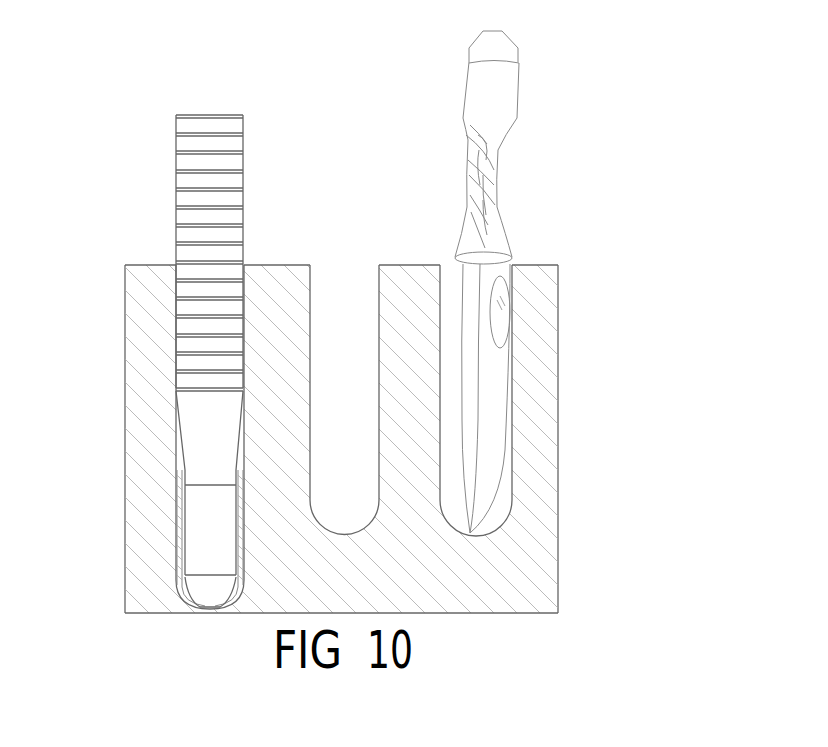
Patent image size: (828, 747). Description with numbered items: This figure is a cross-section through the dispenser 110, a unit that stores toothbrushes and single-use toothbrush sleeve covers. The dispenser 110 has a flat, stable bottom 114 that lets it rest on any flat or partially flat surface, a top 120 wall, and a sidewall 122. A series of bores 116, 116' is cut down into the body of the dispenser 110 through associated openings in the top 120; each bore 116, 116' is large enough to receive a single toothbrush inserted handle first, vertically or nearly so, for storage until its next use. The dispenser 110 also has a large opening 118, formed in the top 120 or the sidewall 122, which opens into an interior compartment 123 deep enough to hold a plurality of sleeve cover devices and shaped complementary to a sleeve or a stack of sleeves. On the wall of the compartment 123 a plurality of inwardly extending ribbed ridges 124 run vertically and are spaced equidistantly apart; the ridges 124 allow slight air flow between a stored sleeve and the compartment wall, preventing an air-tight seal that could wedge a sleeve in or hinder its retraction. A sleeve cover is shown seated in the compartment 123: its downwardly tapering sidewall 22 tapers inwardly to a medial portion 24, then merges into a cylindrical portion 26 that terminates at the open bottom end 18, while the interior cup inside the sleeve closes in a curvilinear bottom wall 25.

The dispenser 110 is at (587, 275).
The bottom 114 is at (513, 614).
The bore 116 is at (453, 385).
The bore 116' is at (322, 376).
The large opening 118 is at (178, 268).
The top wall 120 is at (147, 266).
The sidewall 122 is at (560, 388).
The interior compartment 123 is at (178, 587).
The ribbed ridges 124 is at (176, 503).
The open bottom end 18 is at (469, 62).
The tapering sidewall 22 is at (492, 235).
The medial portion 24 is at (476, 125).
The curvilinear bottom wall 25 is at (505, 33).
The cylindrical portion 26 is at (505, 100).